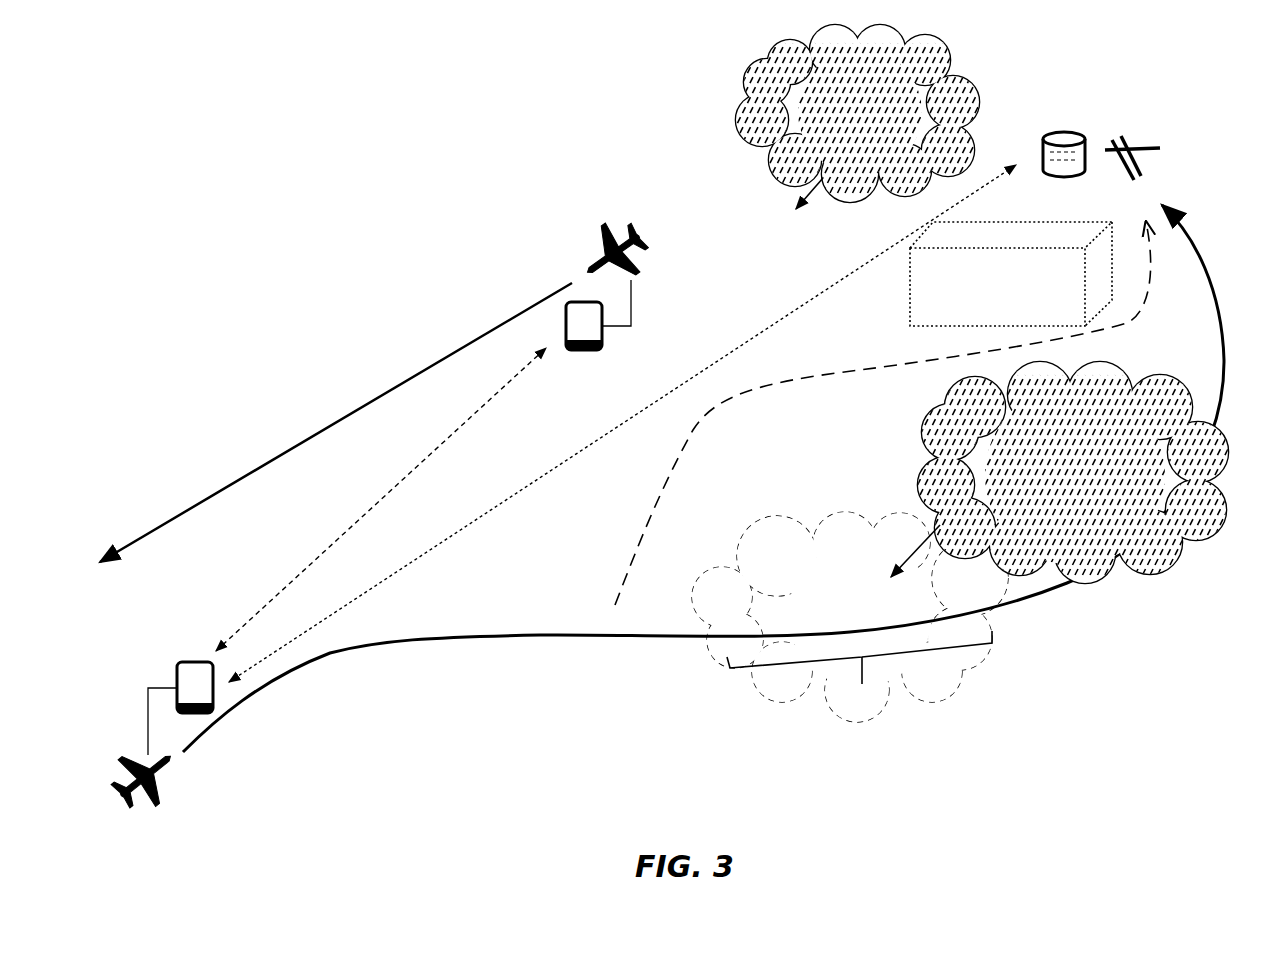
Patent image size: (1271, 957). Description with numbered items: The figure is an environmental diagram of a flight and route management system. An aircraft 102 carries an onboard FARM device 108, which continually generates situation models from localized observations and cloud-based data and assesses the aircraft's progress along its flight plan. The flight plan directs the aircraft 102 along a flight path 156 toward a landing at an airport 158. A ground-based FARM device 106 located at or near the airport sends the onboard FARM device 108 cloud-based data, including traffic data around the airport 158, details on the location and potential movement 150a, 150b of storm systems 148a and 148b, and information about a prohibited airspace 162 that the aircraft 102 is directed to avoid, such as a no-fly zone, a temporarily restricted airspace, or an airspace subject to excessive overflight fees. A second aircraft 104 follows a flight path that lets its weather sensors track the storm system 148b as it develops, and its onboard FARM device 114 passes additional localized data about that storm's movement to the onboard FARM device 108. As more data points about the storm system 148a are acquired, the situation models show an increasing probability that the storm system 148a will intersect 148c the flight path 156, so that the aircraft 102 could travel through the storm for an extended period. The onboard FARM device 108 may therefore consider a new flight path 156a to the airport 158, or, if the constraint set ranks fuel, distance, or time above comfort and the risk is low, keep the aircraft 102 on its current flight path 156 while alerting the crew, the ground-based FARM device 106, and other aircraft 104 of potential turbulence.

The aircraft 102 is at (160, 800).
The aircraft 104 is at (601, 232).
The ground-based FARM device 106 is at (1056, 132).
The onboard FARM device 108 is at (180, 665).
The onboard FARM device 114 is at (584, 352).
The storm system 148a is at (1162, 556).
The storm system 148b is at (765, 160).
The intersection of storm system with flight path 148c is at (850, 617).
The potential movement of storm system 150a is at (903, 568).
The potential movement of storm system 150b is at (815, 190).
The flight path 156 is at (516, 638).
The new flight path 156a is at (636, 550).
The airport 158 is at (1145, 157).
The prohibited airspace 162 is at (910, 288).